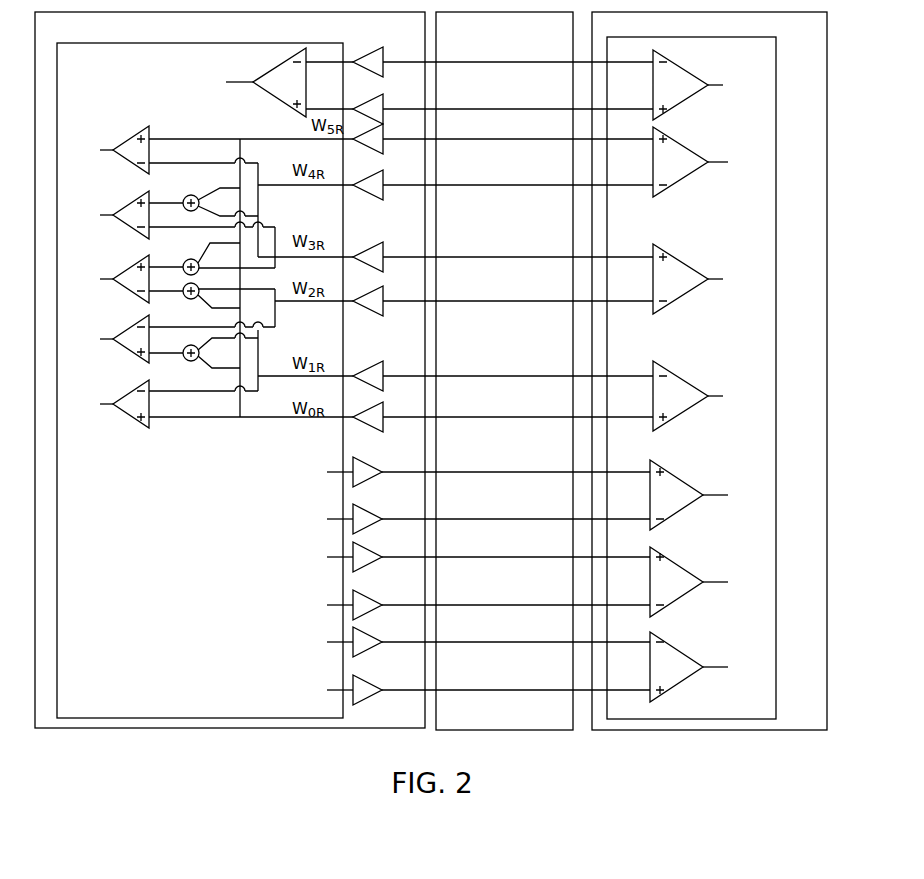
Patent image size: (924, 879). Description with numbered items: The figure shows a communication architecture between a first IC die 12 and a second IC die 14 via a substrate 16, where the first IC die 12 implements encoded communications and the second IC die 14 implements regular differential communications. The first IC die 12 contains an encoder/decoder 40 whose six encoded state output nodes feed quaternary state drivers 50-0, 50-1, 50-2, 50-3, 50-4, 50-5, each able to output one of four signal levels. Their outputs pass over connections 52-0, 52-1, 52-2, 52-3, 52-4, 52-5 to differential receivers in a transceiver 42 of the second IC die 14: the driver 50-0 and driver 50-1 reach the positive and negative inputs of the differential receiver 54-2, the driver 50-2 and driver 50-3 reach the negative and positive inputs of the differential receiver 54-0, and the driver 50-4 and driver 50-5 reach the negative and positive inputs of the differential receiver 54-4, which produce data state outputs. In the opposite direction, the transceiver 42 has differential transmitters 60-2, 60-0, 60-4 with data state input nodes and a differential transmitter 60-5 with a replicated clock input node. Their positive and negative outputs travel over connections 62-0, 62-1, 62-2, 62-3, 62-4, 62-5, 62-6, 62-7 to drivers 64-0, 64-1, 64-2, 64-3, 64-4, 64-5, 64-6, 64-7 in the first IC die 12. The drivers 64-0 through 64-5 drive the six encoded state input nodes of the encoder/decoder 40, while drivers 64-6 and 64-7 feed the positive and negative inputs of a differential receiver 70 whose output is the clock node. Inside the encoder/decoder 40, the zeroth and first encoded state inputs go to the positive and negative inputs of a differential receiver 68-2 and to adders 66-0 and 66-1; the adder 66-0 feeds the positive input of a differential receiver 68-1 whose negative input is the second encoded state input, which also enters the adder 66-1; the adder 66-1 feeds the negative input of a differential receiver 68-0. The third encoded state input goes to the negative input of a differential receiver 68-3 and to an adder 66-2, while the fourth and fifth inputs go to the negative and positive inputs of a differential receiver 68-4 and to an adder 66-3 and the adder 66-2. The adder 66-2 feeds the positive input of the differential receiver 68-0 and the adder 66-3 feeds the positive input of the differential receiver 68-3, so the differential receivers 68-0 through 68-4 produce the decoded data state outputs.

The first IC die 12 is at (70, 30).
The second IC die 14 is at (814, 38).
The substrate 16 is at (486, 41).
The encoder/decoder 40 is at (119, 69).
The transceiver 42 is at (766, 61).
The differential receiver 70 is at (274, 70).
The differential receiver 68-4 is at (107, 161).
The differential receiver 68-3 is at (107, 226).
The differential receiver 68-0 is at (107, 289).
The differential receiver 68-1 is at (107, 349).
The differential receiver 68-2 is at (107, 413).
The adder 66-3 is at (187, 194).
The adder 66-2 is at (186, 259).
The adder 66-1 is at (178, 300).
The adder 66-0 is at (178, 362).
The driver 64-7 is at (383, 70).
The driver 64-6 is at (383, 117).
The driver 64-5 is at (383, 147).
The driver 64-4 is at (383, 193).
The driver 64-3 is at (383, 265).
The driver 64-2 is at (383, 309).
The driver 64-1 is at (383, 384).
The driver 64-0 is at (383, 425).
The connection 62-7 is at (512, 61).
The connection 62-6 is at (512, 108).
The connection 62-5 is at (512, 138).
The connection 62-4 is at (512, 184).
The connection 62-3 is at (512, 256).
The connection 62-2 is at (512, 300).
The connection 62-1 is at (512, 375).
The connection 62-0 is at (512, 416).
The differential transmitter 60-5 is at (706, 110).
The differential transmitter 60-4 is at (690, 190).
The differential transmitter 60-0 is at (690, 306).
The differential transmitter 60-2 is at (700, 425).
The driver 50-5 is at (371, 482).
The driver 50-4 is at (371, 529).
The driver 50-3 is at (371, 567).
The driver 50-2 is at (371, 615).
The driver 50-1 is at (371, 652).
The driver 50-0 is at (371, 700).
The connection 52-5 is at (512, 471).
The connection 52-4 is at (512, 518).
The connection 52-3 is at (512, 556).
The connection 52-2 is at (512, 604).
The connection 52-1 is at (512, 641).
The connection 52-0 is at (512, 689).
The differential receiver 54-4 is at (684, 511).
The differential receiver 54-0 is at (684, 598).
The differential receiver 54-2 is at (684, 684).